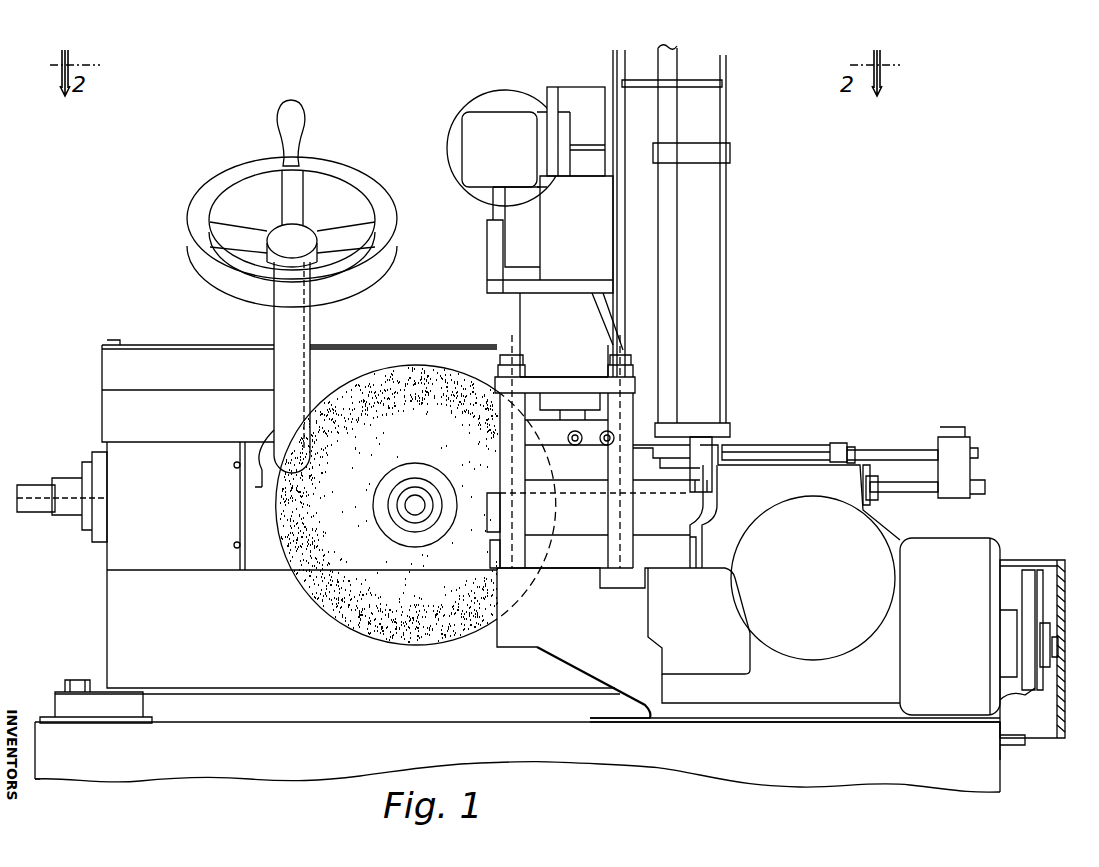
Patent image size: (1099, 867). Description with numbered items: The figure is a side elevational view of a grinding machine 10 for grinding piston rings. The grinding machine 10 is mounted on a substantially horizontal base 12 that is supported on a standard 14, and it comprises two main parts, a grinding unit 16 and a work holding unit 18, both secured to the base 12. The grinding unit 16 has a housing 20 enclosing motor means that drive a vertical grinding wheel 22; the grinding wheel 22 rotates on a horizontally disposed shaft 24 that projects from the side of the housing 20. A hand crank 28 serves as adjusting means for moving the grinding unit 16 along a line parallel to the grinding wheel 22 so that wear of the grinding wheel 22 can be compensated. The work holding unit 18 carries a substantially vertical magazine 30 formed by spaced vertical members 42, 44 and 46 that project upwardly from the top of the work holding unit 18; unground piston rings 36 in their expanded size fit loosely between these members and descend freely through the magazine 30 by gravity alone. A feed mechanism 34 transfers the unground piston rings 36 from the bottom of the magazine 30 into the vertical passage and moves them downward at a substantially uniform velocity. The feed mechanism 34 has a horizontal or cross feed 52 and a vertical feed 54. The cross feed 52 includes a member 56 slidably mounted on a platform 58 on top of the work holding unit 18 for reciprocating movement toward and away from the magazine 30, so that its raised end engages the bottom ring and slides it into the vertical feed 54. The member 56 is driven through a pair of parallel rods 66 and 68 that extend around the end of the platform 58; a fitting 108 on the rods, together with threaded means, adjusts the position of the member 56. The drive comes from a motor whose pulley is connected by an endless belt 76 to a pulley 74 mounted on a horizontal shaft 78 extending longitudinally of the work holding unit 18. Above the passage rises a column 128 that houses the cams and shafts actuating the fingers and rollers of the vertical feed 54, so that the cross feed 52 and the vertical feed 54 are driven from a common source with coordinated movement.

The grinding machine 10 is at (216, 340).
The base 12 is at (310, 716).
The standard 14 is at (128, 766).
The grinding unit 16 is at (101, 405).
The work holding unit 18 is at (750, 442).
The housing 20 is at (186, 356).
The grinding wheel 22 is at (415, 622).
The shaft 24 is at (413, 508).
The hand crank 28 is at (376, 212).
The magazine 30 is at (722, 270).
The feed mechanism 34 is at (654, 420).
The unground piston rings 36 is at (722, 345).
The vertical member 42 is at (617, 83).
The vertical member 44 is at (668, 185).
The vertical member 46 is at (722, 163).
The horizontal or cross feed 52 is at (727, 455).
The vertical feed 54 is at (596, 458).
The member 56 is at (798, 448).
The platform 58 is at (866, 467).
The rod 66 is at (878, 452).
The rod 68 is at (942, 488).
The pulley 74 is at (1046, 574).
The endless belt 76 is at (1029, 574).
The horizontal shaft 78 is at (1060, 683).
The fitting 108 is at (964, 473).
The column 128 is at (587, 285).